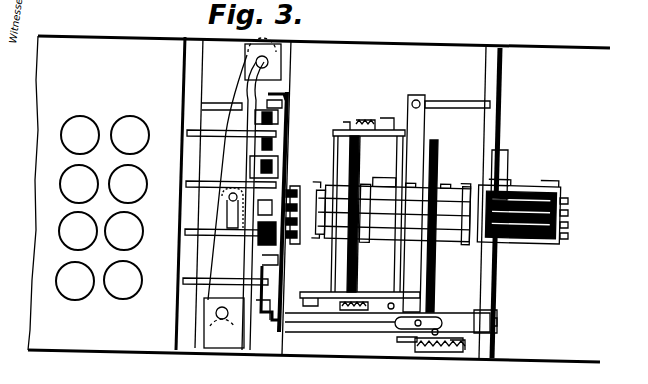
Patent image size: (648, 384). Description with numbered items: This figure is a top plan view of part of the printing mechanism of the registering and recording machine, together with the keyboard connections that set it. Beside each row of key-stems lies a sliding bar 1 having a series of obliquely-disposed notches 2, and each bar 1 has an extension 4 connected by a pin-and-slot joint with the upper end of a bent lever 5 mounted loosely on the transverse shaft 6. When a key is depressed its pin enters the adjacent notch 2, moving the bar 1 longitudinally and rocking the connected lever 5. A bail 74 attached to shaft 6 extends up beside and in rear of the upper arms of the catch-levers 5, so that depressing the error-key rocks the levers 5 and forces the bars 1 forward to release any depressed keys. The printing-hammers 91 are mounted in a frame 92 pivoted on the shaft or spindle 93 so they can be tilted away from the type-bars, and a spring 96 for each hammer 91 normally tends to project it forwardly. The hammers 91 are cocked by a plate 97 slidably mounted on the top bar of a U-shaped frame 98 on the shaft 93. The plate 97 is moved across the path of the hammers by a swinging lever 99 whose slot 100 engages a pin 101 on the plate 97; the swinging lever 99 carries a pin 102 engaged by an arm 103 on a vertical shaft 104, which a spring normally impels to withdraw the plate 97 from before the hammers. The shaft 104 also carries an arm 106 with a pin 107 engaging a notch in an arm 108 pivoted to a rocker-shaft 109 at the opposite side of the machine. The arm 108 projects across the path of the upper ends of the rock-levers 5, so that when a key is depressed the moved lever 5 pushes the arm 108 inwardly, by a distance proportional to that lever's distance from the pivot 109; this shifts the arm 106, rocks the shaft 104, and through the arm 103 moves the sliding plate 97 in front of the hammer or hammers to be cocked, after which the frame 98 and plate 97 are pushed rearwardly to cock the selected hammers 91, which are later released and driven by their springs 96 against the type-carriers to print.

The sliding bar 1 is at (126, 207).
The notches 2 is at (77, 208).
The extension 4 is at (228, 178).
The bent lever 5 is at (278, 114).
The transverse shaft 6 is at (258, 338).
The bail 74 is at (278, 158).
The printing-hammers 91 is at (432, 207).
The frame 92 is at (505, 243).
The shaft or spindle 93 is at (497, 296).
The spring 96 is at (568, 203).
The plate 97 is at (369, 214).
The U-shaped frame 98 is at (450, 110).
The swinging lever 99 is at (460, 354).
The slot 100 is at (457, 326).
The pin 101 is at (432, 353).
The pin 102 is at (418, 320).
The arm 103 is at (370, 326).
The vertical shaft 104 is at (222, 319).
The arm 106 is at (205, 272).
The pin 107 is at (229, 198).
The arm 108 is at (240, 107).
The rocker-shaft 109 is at (268, 62).